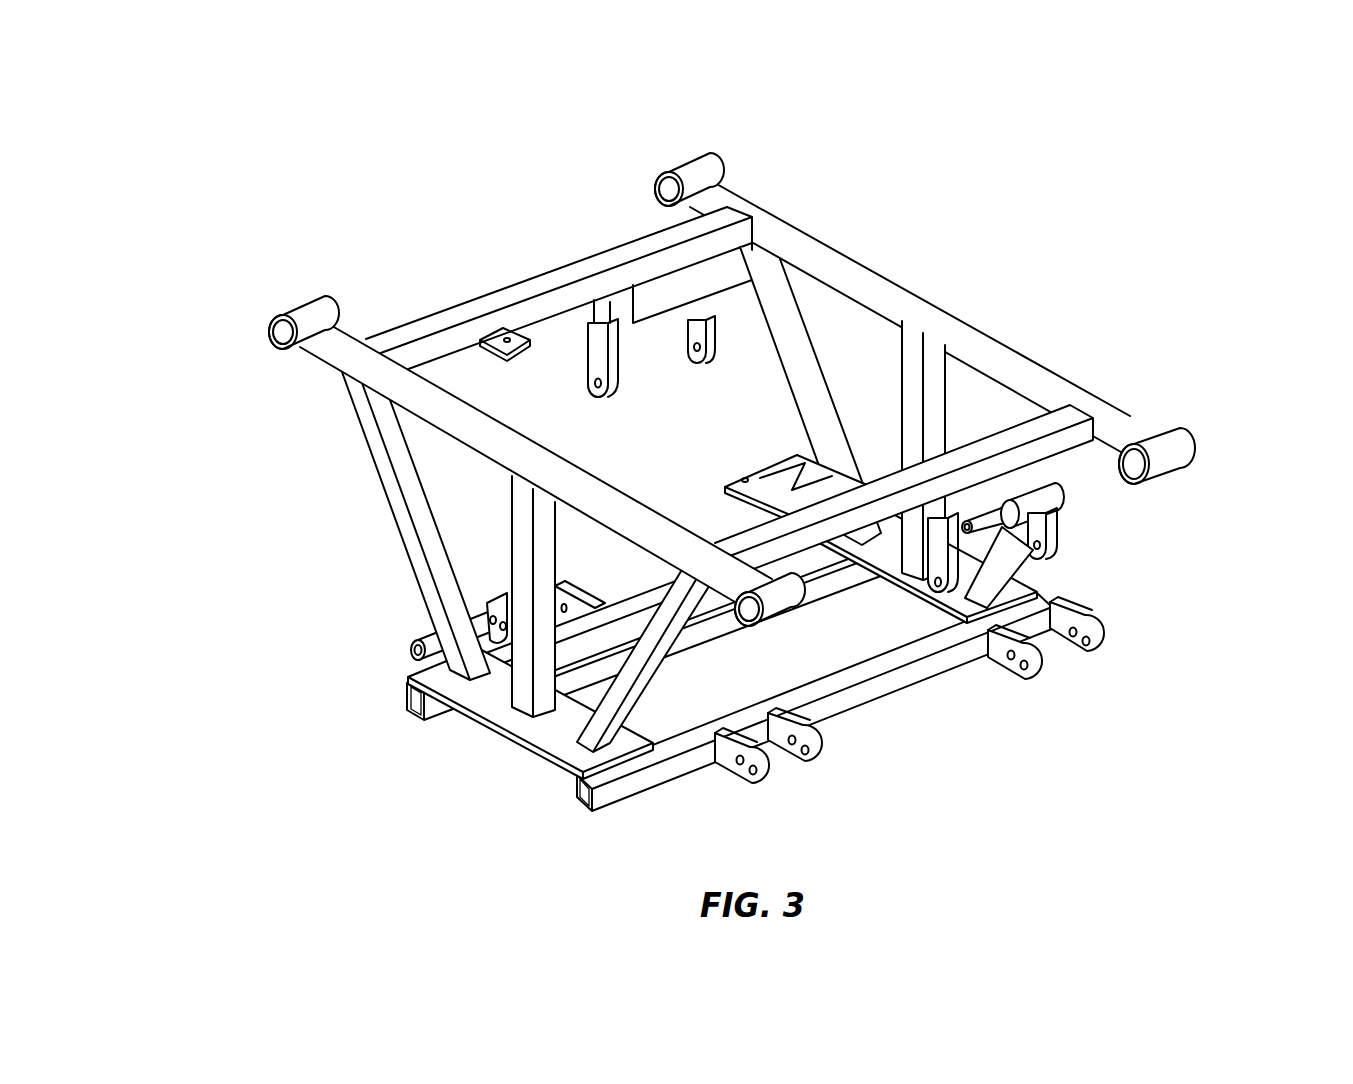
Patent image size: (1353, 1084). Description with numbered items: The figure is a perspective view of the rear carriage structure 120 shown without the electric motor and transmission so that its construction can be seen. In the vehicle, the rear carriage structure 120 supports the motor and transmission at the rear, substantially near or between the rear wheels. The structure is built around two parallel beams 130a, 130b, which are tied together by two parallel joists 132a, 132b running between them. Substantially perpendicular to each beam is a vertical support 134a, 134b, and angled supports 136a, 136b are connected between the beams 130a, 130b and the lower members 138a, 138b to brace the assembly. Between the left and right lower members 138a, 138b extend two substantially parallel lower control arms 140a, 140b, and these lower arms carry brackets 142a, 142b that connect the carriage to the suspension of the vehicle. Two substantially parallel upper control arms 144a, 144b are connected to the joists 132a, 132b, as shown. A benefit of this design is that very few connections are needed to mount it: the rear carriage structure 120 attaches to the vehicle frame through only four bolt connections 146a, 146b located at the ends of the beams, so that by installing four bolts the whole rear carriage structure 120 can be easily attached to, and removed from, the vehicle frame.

The rear carriage structure 120 is at (933, 208).
The parallel beam 130a is at (485, 445).
The parallel beam 130b is at (1063, 382).
The parallel joist 132a is at (568, 270).
The parallel joist 132b is at (985, 440).
The vertical support 134a is at (525, 668).
The vertical support 134b is at (913, 367).
The angled support 136a is at (793, 400).
The angled support 136b is at (1035, 560).
The lower member 138a is at (553, 730).
The lower member 138b is at (937, 603).
The lower control arm 140a is at (887, 692).
The lower control arm 140b is at (637, 597).
The bracket 142a is at (808, 758).
The bracket 142b is at (1103, 638).
The upper control arm 144a is at (660, 333).
The upper control arm 144b is at (985, 560).
The bolt connection 146a is at (293, 312).
The bolt connection 146b is at (1172, 455).